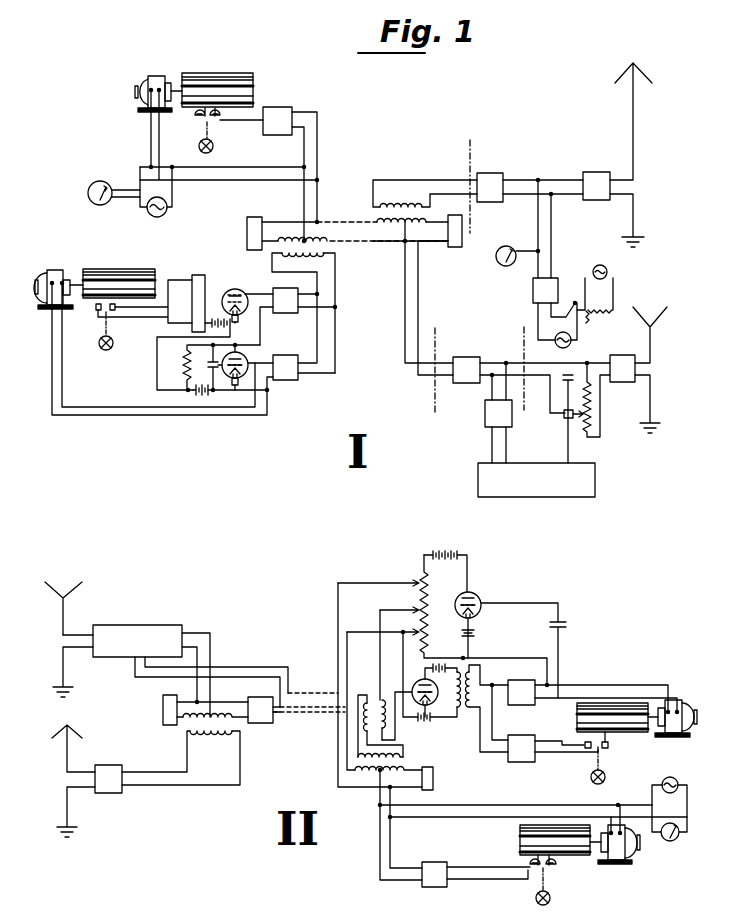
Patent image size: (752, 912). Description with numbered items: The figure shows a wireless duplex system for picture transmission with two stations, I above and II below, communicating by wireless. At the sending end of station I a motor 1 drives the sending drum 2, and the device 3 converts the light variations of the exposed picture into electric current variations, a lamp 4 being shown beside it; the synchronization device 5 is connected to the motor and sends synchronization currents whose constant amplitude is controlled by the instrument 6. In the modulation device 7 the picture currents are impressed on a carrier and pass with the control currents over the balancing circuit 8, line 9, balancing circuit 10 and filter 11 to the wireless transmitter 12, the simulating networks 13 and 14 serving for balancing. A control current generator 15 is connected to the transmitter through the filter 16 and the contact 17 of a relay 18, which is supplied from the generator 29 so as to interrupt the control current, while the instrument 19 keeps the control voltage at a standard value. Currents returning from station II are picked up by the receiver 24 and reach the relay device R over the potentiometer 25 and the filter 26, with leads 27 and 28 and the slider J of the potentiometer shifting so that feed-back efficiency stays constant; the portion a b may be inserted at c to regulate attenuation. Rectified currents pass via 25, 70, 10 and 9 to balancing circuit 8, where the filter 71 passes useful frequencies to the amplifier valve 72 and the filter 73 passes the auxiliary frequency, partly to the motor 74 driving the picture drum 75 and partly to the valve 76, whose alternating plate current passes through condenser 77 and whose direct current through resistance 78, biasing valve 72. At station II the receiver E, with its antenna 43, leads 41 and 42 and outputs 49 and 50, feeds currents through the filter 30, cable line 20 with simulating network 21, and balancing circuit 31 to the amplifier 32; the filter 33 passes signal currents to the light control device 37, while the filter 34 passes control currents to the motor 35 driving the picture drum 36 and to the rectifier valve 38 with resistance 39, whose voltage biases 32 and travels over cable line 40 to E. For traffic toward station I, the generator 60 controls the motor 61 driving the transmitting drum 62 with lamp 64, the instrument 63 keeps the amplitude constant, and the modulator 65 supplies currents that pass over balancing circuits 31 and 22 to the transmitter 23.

The motor 1 is at (150, 74).
The sending drum 2 is at (215, 72).
The light converting device 3 is at (195, 120).
The lamp 4 is at (214, 146).
The synchronization device 5 is at (150, 213).
The instrument 6 is at (100, 181).
The modulation device 7 is at (278, 114).
The balancing circuit 8 is at (327, 255).
The line 9 is at (363, 231).
The balancing circuit 10 is at (403, 207).
The filter 11 is at (489, 175).
The wireless transmitter 12 is at (595, 175).
The simulating network 13 is at (247, 234).
The simulating network 14 is at (454, 247).
The control current generator 15 is at (556, 345).
The filter 16 is at (533, 291).
The relay contact 17 is at (565, 300).
The relay 18 is at (603, 317).
The instrument 19 is at (503, 264).
The receiver 24 is at (628, 382).
The potentiometer 25 is at (593, 415).
The filter 26 is at (485, 414).
The lead 27 is at (491, 447).
The lead 28 is at (507, 447).
The generator 29 is at (606, 270).
The connecting element 70 is at (462, 358).
The filter 71 is at (286, 318).
The amplifier valve 72 is at (250, 284).
The filter 73 is at (286, 383).
The motor 74 is at (52, 270).
The drum cylinder 75 is at (113, 272).
The rectifying valve 76 is at (247, 356).
The condenser 77 is at (222, 391).
The resistance 78 is at (184, 366).
The portion end a is at (433, 360).
The portion end b is at (522, 359).
The insertion point c is at (467, 177).
The slider J is at (563, 425).
The relay device R is at (536, 480).
The cable line 20 is at (288, 713).
The simulating network 21 is at (163, 713).
The balancing circuit 22 is at (210, 736).
The transmitter 23 is at (108, 770).
The filter 30 is at (264, 723).
The balancing circuit 31 is at (427, 767).
The amplifier 32 is at (437, 705).
The filter 33 is at (525, 762).
The filter 34 is at (525, 705).
The motor 35 is at (686, 700).
The picture drum 36 is at (615, 702).
The light control device 37 is at (608, 746).
The rectifier valve 38 is at (481, 601).
The resistance 39 is at (419, 598).
The cable line 40 is at (311, 693).
The lead 41 is at (78, 633).
The ground lead 42 is at (78, 648).
The antenna 43 is at (63, 600).
The lead 49 is at (211, 632).
The lead 50 is at (198, 650).
The generator 60 is at (674, 779).
The motor 61 is at (618, 864).
The transmitting drum 62 is at (562, 856).
The instrument 63 is at (670, 841).
The lamp 64 is at (550, 886).
The modulator 65 is at (436, 859).
The receiver E is at (137, 627).